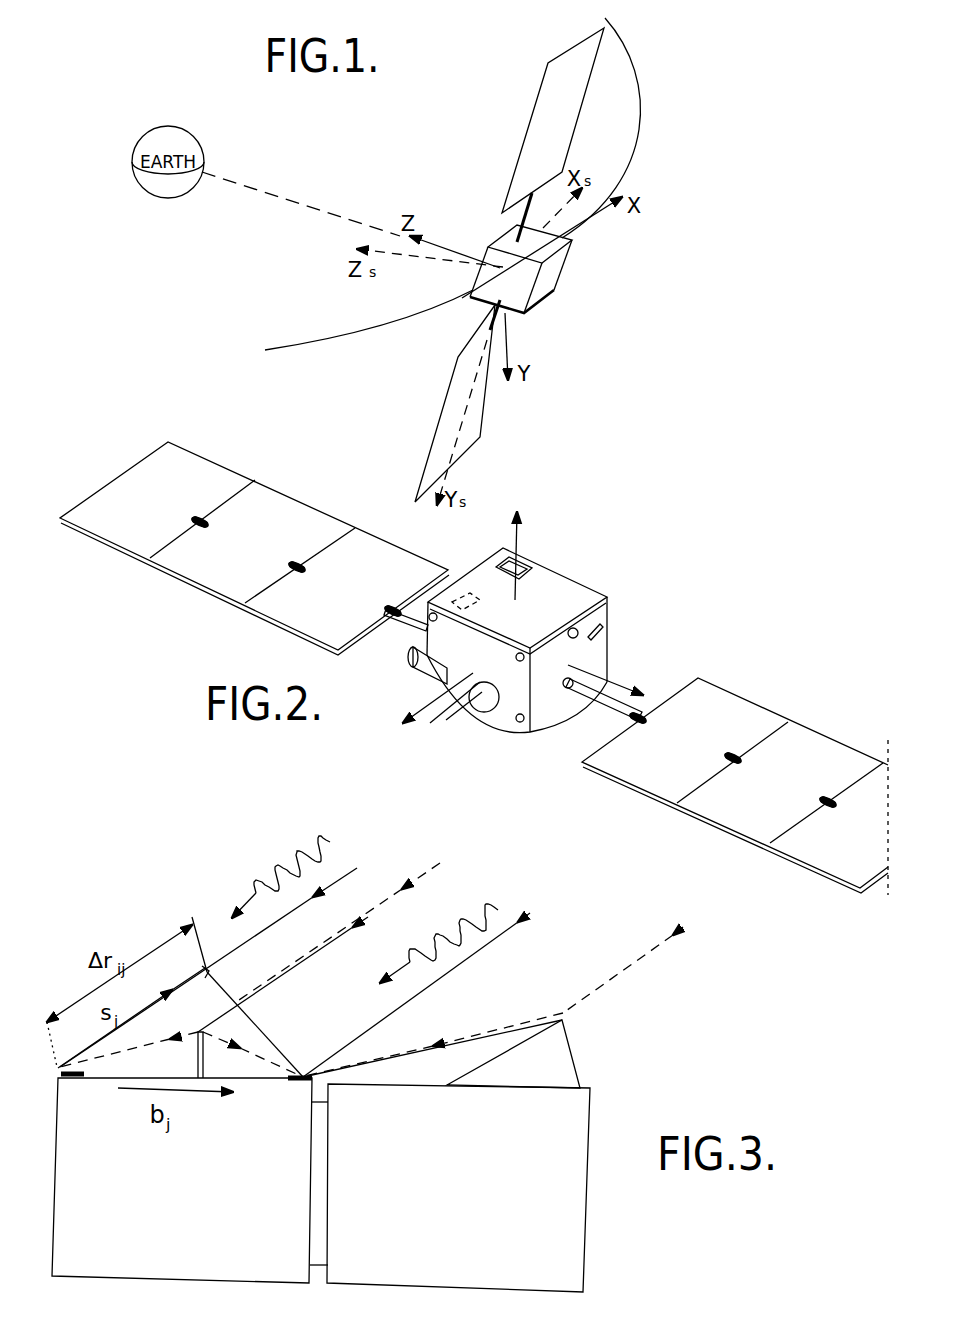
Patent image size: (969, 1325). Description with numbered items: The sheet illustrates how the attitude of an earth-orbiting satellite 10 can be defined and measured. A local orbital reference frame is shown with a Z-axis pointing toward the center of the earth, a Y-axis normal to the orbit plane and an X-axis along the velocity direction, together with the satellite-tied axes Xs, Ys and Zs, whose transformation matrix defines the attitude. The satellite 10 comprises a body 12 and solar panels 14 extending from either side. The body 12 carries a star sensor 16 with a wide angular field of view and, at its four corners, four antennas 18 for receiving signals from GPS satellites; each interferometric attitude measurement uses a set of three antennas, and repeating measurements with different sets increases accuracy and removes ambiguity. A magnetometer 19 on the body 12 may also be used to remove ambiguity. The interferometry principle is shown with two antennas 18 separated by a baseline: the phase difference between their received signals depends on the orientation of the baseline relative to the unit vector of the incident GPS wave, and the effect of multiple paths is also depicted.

In FIG. 2, the satellite 10 is at (612, 643).
In FIG. 2, the body 12 is at (547, 690).
In FIG. 2, the solar panels 14 is at (227, 568).
In FIG. 2, the star sensor 16 is at (530, 572).
In FIG. 2, the antennas 18 is at (518, 662).
In FIG. 3, the antennas 18 is at (70, 1079).
In FIG. 2, the magnetometer 19 is at (469, 597).